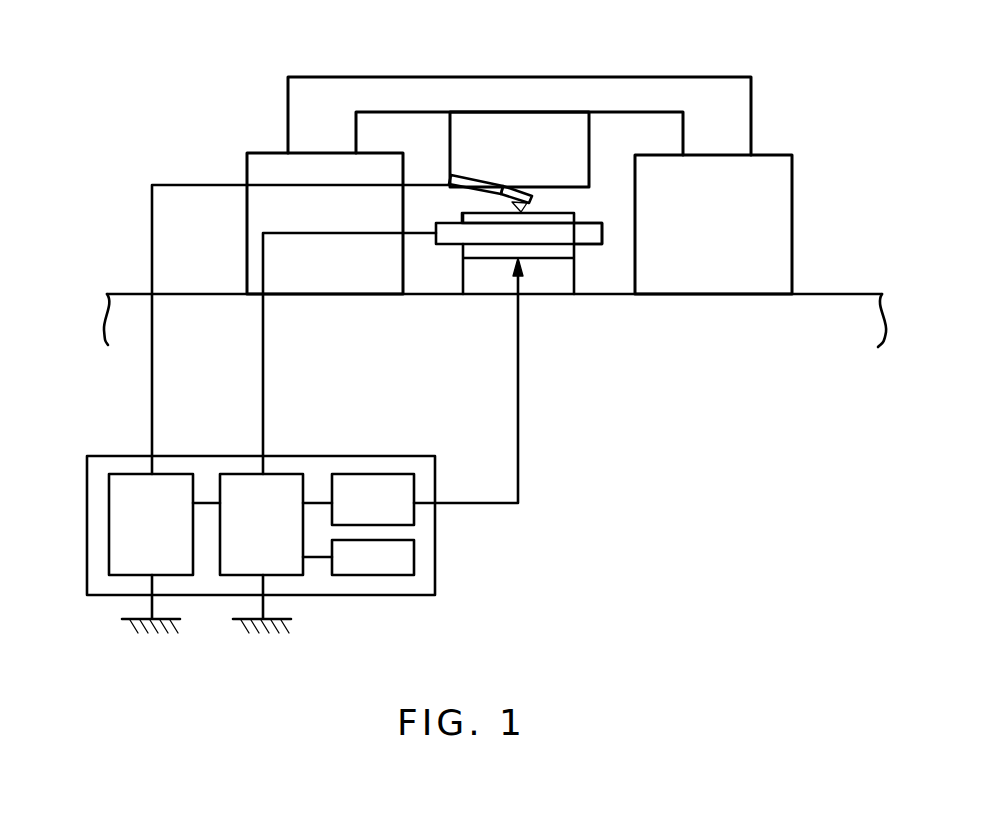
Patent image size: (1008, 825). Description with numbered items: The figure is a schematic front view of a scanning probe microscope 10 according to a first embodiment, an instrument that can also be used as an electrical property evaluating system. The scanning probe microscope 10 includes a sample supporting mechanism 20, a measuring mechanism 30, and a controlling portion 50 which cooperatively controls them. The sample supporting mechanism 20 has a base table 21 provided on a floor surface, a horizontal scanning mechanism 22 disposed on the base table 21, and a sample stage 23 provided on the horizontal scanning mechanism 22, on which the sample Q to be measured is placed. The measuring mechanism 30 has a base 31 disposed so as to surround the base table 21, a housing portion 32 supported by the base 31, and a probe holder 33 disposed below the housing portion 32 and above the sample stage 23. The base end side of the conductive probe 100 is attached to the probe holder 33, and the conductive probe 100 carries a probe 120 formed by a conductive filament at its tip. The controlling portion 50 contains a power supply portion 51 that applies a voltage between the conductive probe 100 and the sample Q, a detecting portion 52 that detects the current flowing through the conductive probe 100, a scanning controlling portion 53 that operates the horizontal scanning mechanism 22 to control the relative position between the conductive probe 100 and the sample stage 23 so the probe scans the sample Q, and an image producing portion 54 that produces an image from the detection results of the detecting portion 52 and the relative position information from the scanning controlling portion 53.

The scanning probe microscope 10 is at (808, 189).
The measuring mechanism 30 is at (633, 77).
The base 31 is at (780, 256).
The housing portion 32 is at (740, 117).
The probe holder 33 is at (577, 167).
The conductive probe 100 is at (505, 199).
The sample Q is at (462, 218).
The sample supporting mechanism 20 is at (577, 272).
The base table 21 is at (503, 285).
The horizontal scanning mechanism 22 is at (485, 253).
The sample stage 23 is at (597, 244).
The probe 120 is at (537, 213).
The controlling portion 50 is at (435, 565).
The power supply portion 51 is at (235, 578).
The detecting portion 52 is at (109, 520).
The scanning controlling portion 53 is at (372, 474).
The image producing portion 54 is at (372, 575).